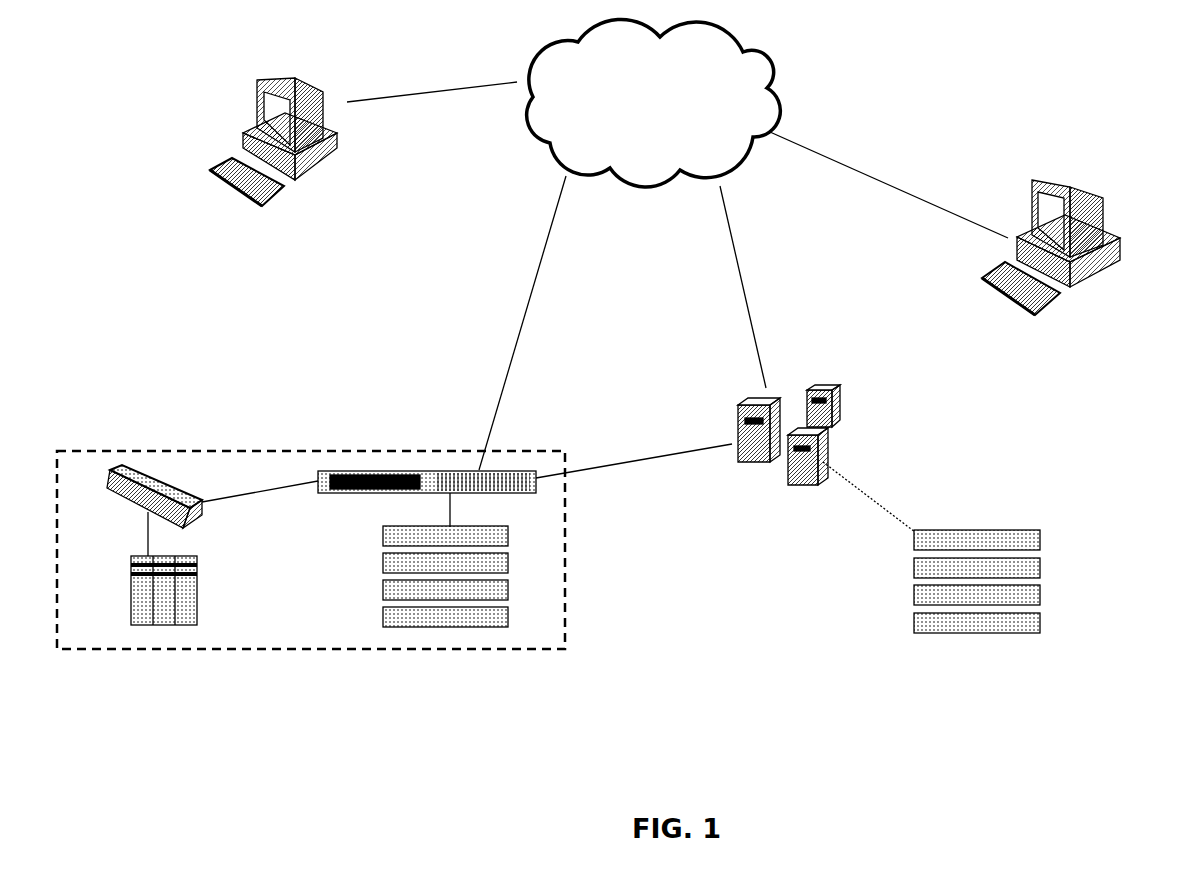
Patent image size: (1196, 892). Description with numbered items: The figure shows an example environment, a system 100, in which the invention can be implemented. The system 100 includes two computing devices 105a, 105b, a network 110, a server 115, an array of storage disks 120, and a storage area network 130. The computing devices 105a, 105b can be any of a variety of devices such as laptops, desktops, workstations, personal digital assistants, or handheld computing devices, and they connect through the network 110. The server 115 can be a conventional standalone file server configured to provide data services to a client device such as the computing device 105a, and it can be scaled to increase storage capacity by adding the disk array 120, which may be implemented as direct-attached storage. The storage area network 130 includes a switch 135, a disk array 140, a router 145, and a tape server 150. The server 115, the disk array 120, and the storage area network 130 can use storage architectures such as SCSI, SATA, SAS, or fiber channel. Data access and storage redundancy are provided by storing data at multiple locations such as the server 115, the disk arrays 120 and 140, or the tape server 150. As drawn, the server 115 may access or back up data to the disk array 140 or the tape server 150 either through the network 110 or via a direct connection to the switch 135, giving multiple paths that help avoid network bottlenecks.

The system 100 is at (1113, 700).
The computing device 105a is at (220, 195).
The computing device 105b is at (1050, 310).
The network 110 is at (654, 103).
The server 115 is at (800, 510).
The array of storage disks 120 is at (1033, 530).
The storage area network 130 is at (335, 647).
The switch 135 is at (438, 472).
The disk array 140 is at (480, 620).
The router 145 is at (122, 465).
The tape server 150 is at (148, 620).